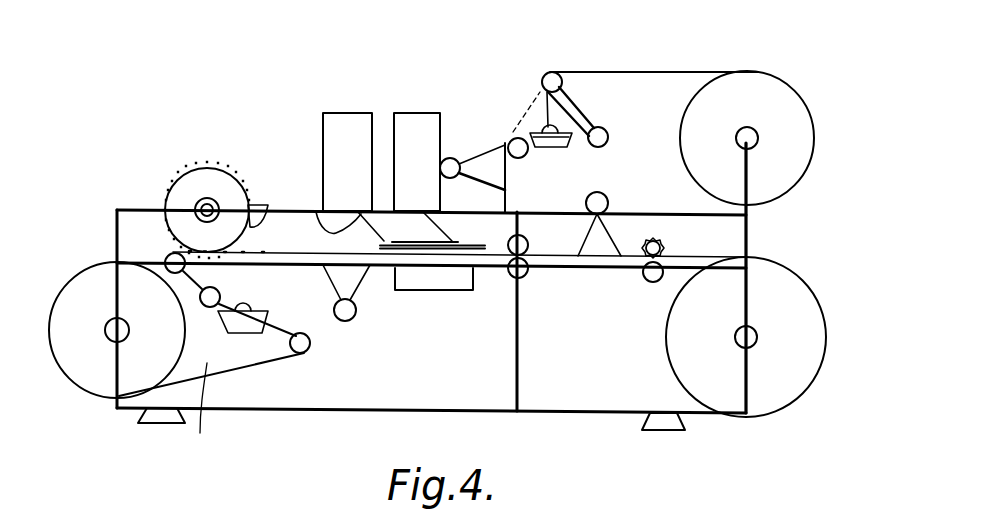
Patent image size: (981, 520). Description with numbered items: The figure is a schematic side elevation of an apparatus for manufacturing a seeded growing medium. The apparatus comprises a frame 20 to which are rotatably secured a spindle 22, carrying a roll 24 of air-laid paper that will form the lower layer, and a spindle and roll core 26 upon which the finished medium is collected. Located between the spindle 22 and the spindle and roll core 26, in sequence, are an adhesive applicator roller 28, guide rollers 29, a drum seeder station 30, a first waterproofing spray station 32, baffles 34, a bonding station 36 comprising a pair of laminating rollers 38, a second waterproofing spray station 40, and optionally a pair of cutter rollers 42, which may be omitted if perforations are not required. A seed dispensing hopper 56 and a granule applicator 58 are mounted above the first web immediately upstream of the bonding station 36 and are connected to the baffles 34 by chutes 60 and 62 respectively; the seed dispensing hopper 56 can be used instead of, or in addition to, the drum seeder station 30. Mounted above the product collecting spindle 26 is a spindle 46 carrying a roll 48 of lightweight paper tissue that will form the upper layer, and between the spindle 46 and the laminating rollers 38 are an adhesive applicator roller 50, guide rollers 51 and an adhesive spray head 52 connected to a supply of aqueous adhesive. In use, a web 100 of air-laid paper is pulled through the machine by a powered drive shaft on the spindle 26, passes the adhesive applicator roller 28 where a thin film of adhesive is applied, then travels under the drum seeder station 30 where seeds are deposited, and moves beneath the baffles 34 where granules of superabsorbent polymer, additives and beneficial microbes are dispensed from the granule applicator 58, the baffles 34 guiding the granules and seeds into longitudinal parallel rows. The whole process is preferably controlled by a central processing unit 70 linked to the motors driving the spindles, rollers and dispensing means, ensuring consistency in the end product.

The frame 20 is at (143, 209).
The spindle 22 is at (106, 330).
The roll 24 is at (97, 372).
The spindle and roll core 26 is at (752, 345).
The adhesive applicator roller 28 is at (250, 333).
The guide rollers 29 is at (167, 257).
The drum seeder station 30 is at (203, 168).
The first waterproofing spray station 32 is at (315, 248).
The baffles 34 is at (396, 242).
The bonding station 36 is at (527, 268).
The laminating rollers 38 is at (509, 278).
The second waterproofing spray station 40 is at (606, 195).
The cutter rollers 42 is at (653, 238).
The spindle 46 is at (753, 127).
The roll 48 is at (737, 82).
The adhesive applicator roller 50 is at (545, 127).
The guide rollers 51 is at (598, 127).
The adhesive spray head 52 is at (452, 158).
The seed dispensing hopper 56 is at (322, 121).
The granule applicator 58 is at (422, 113).
The chute 60 is at (336, 304).
The chute 62 is at (454, 238).
The central processing unit 70 is at (420, 278).
The web 100 is at (205, 412).